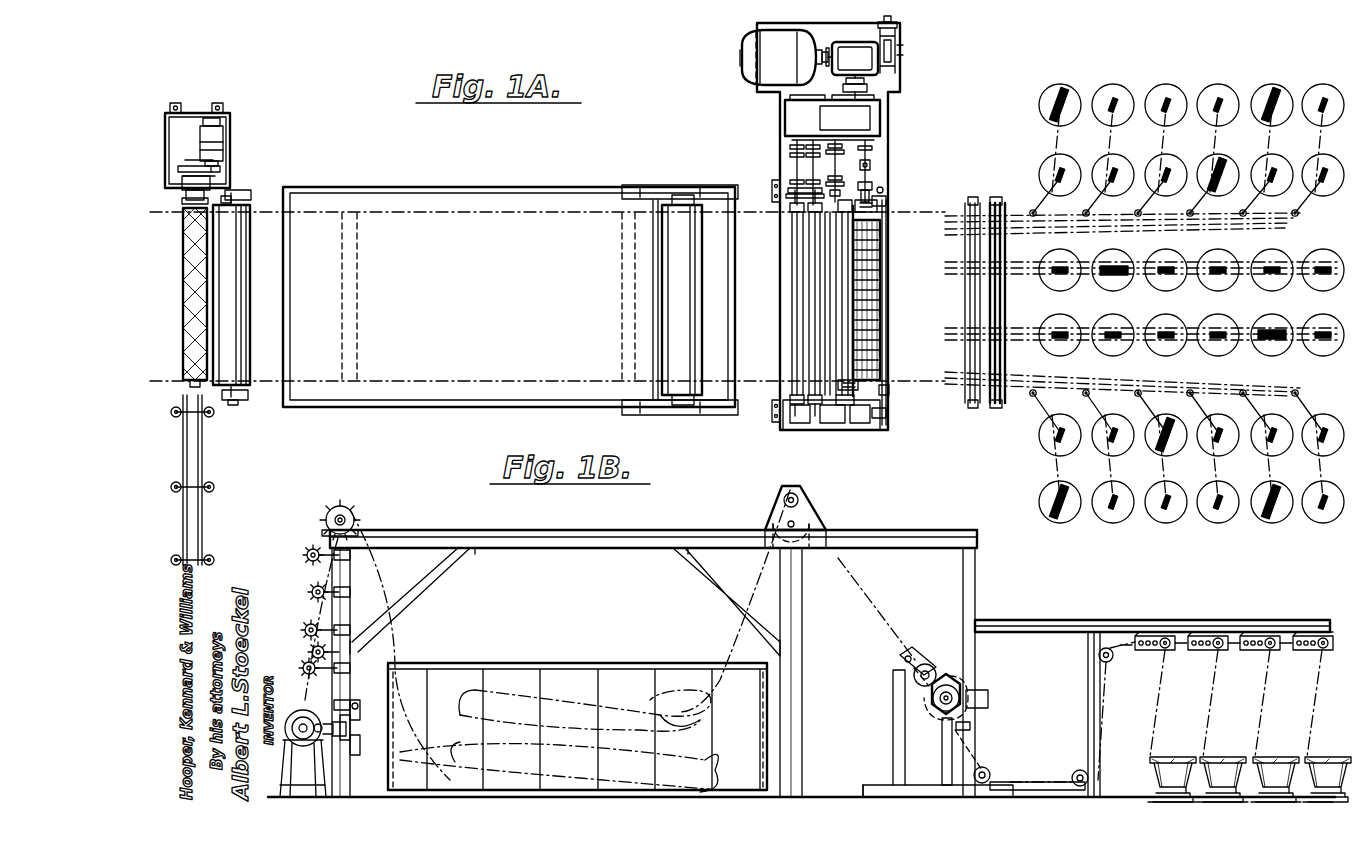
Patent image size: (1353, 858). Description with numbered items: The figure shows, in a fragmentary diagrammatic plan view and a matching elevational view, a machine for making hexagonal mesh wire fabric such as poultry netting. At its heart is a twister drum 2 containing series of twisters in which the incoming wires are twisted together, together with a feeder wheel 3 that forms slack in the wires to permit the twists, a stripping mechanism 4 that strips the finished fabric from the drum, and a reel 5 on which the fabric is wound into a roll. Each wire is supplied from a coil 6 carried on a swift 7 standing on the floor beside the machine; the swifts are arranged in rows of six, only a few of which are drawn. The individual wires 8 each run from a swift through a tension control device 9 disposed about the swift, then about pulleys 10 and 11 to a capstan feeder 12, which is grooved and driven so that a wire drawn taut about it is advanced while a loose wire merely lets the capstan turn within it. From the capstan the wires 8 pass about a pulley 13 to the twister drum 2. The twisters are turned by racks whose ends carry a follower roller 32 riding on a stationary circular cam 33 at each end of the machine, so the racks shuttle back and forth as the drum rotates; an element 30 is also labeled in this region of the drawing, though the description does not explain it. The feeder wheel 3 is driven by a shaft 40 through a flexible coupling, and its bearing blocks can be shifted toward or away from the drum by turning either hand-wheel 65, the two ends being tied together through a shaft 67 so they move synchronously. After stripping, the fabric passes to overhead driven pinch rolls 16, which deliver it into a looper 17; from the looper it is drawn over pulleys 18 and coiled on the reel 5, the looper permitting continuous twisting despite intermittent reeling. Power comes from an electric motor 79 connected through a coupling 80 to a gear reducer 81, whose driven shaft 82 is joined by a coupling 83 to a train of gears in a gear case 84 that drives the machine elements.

In FIG. 1A, the twister drum 2 is at (843, 253).
In FIG. 1B, the twister drum 2 is at (962, 684).
In FIG. 1A, the feeder wheel 3 is at (880, 283).
In FIG. 1A, the stripping mechanism 4 is at (822, 318).
In FIG. 1B, the stripping mechanism 4 is at (926, 664).
In FIG. 1A, the reel 5 is at (186, 206).
In FIG. 1B, the reel 5 is at (325, 762).
In FIG. 1B, the coil 6 is at (1160, 790).
In FIG. 1A, the swift 7 is at (1166, 160).
In FIG. 1B, the swift 7 is at (1160, 772).
In FIG. 1A, the wires 8 is at (955, 236).
In FIG. 1B, the wires 8 is at (868, 597).
In FIG. 1A, the tension control device 9 is at (1268, 122).
In FIG. 1B, the tension control device 9 is at (1196, 640).
In FIG. 1A, the pulley 10 is at (1003, 208).
In FIG. 1B, the pulley 10 is at (1103, 662).
In FIG. 1A, the pulley 11 is at (968, 210).
In FIG. 1B, the pulley 11 is at (1076, 771).
In FIG. 1B, the capstan feeder 12 is at (986, 770).
In FIG. 1B, the pulley 13 is at (945, 728).
In FIG. 1A, the pinch rolls 16 is at (693, 290).
In FIG. 1B, the pinch rolls 16 is at (800, 501).
In FIG. 1A, the looper 17 is at (460, 200).
In FIG. 1B, the looper 17 is at (560, 675).
In FIG. 1A, the pulleys 18 is at (246, 205).
In FIG. 1B, the pulleys 18 is at (348, 510).
In FIG. 1A, the spindle 30 is at (866, 162).
In FIG. 1A, the follower roller 32 is at (835, 388).
In FIG. 1A, the circular cam 33 is at (800, 170).
In FIG. 1A, the shaft 40 is at (876, 183).
In FIG. 1A, the hand-wheel 65 is at (887, 200).
In FIG. 1A, the shaft 67 is at (888, 304).
In FIG. 1A, the electric motor 79 is at (748, 72).
In FIG. 1A, the coupling 80 is at (823, 68).
In FIG. 1A, the gear reducer 81 is at (855, 58).
In FIG. 1A, the driven shaft 82 is at (888, 66).
In FIG. 1A, the coupling 83 is at (858, 88).
In FIG. 1A, the gear case 84 is at (808, 124).